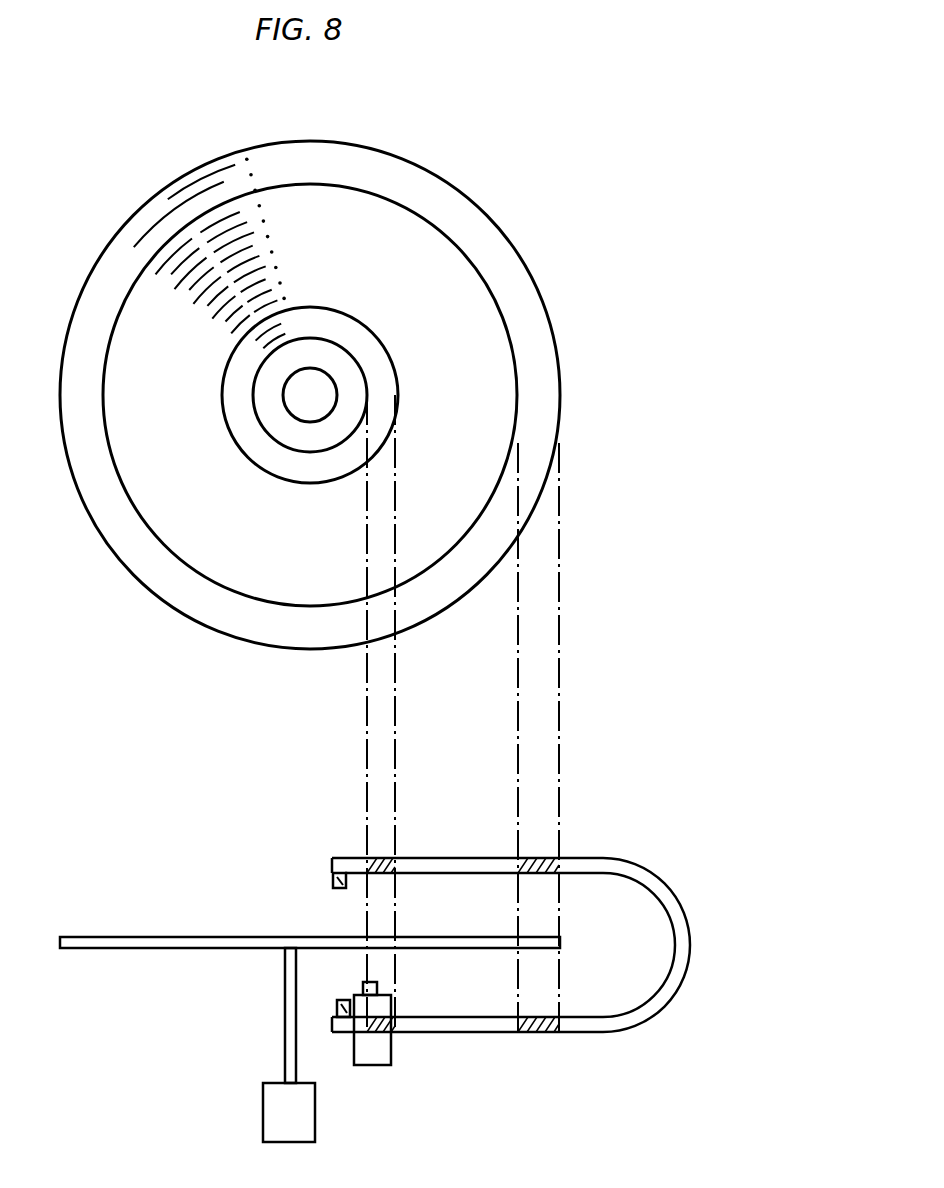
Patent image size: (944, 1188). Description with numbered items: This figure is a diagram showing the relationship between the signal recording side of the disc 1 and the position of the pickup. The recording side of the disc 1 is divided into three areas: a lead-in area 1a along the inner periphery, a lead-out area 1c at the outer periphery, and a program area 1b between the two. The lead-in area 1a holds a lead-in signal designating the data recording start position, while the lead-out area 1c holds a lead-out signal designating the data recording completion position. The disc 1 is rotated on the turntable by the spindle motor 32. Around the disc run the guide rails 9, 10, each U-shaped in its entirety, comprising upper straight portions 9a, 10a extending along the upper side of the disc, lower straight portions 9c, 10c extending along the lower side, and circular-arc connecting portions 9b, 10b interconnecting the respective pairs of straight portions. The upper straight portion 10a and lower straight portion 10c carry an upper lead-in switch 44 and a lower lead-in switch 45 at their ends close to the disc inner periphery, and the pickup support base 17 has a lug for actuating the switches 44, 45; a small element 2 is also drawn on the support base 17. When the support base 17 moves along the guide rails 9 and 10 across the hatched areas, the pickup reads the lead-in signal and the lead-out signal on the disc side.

The disc 1 is at (349, 586).
The lead-in area 1a is at (258, 444).
The program area 1b is at (495, 400).
The lead-out area 1c is at (530, 455).
The push pin 2 is at (378, 988).
The guide rail 9 is at (582, 943).
The upper straight portion 9a is at (467, 807).
The circular-arc connecting portion 9b is at (718, 945).
The lower straight portion 9c is at (467, 1081).
The guide rail 10 is at (582, 943).
The upper straight portion 10a is at (453, 848).
The circular-arc connecting portion 10b is at (690, 938).
The lower straight portion 10c is at (458, 1045).
The pickup support base 17 is at (367, 1052).
The spindle motor 32 is at (263, 1118).
The upper lead-in switch 44 is at (340, 880).
The lower lead-in switch 45 is at (340, 1007).